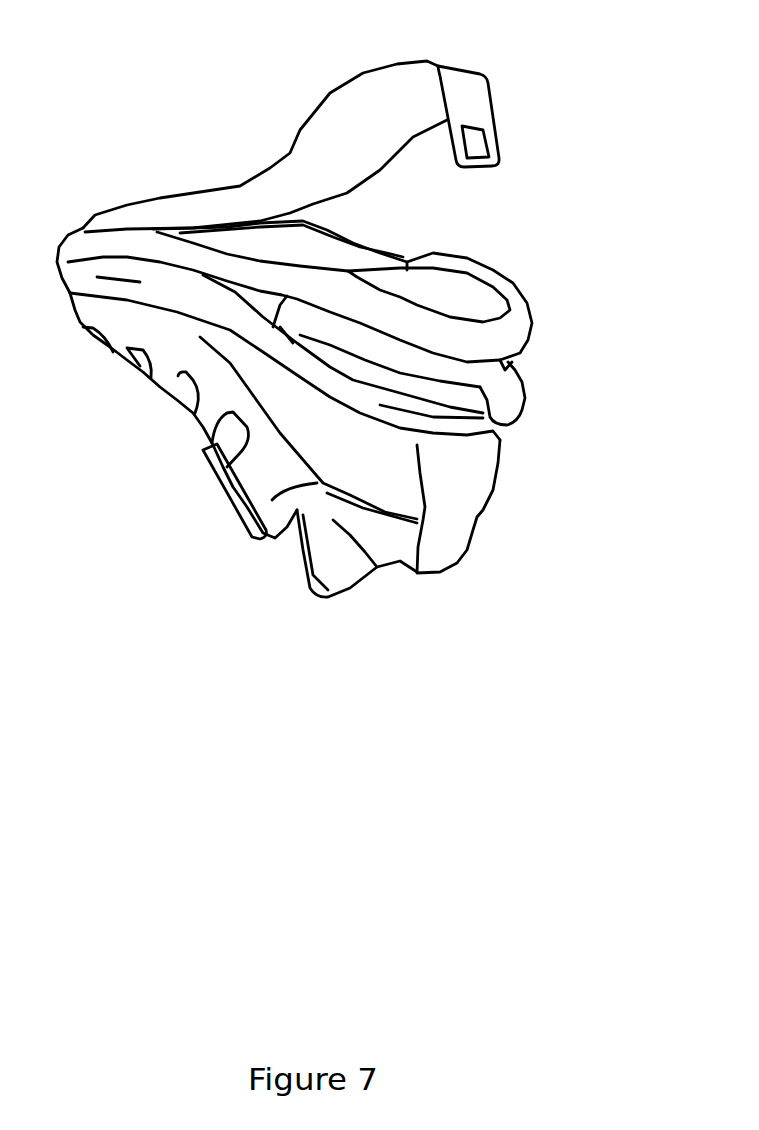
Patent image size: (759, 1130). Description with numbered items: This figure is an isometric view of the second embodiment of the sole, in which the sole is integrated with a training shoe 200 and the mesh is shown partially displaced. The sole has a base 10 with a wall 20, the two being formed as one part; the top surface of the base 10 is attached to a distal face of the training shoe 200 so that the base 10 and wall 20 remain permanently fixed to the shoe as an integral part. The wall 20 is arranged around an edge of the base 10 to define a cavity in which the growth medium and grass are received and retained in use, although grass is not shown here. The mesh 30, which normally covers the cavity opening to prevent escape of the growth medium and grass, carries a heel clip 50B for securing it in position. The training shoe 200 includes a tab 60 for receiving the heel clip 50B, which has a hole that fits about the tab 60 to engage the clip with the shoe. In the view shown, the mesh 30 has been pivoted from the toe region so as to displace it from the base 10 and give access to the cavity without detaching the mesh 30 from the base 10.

The mesh 30 is at (303, 177).
The heel clip 50B is at (477, 95).
The wall 20 is at (466, 270).
The base 10 is at (467, 293).
The tab 60 is at (500, 407).
The training shoe 200 is at (186, 494).